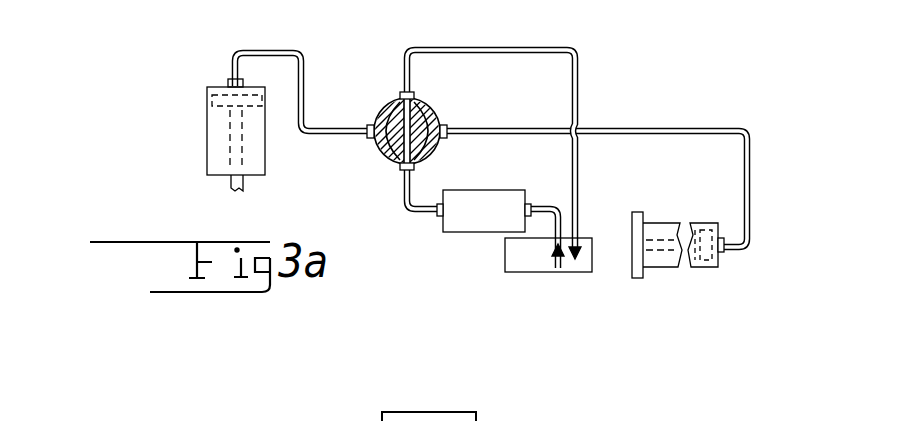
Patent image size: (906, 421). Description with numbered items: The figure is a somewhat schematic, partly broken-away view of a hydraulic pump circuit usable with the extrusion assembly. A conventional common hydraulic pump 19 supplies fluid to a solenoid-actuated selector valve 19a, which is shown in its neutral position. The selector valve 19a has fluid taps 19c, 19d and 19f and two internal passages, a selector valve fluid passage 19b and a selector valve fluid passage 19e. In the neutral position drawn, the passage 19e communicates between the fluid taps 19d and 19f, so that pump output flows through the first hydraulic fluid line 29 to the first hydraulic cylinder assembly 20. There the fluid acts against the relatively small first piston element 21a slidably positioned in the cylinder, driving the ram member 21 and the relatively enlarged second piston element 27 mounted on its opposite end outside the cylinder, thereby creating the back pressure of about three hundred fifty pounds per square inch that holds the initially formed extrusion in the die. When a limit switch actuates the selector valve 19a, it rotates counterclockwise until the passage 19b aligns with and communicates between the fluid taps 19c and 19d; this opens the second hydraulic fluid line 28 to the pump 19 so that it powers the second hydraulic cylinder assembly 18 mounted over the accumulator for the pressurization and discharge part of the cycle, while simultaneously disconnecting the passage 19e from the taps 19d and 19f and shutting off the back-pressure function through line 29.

The second hydraulic cylinder assembly 18 is at (206, 131).
The second hydraulic fluid line 28 is at (305, 70).
The first hydraulic fluid line 29 is at (693, 128).
The hydraulic pump 19 is at (487, 221).
The solenoid-actuated selector valve 19a is at (426, 129).
The selector valve fluid passage 19b is at (388, 161).
The fluid tap 19c is at (368, 138).
The fluid tap 19d is at (414, 167).
The selector valve fluid passage 19e is at (421, 106).
The fluid tap 19f is at (447, 138).
The second piston element 27 is at (639, 212).
The first hydraulic cylinder assembly 20 is at (674, 271).
The ram member 21 is at (717, 248).
The first piston element 21a is at (706, 266).